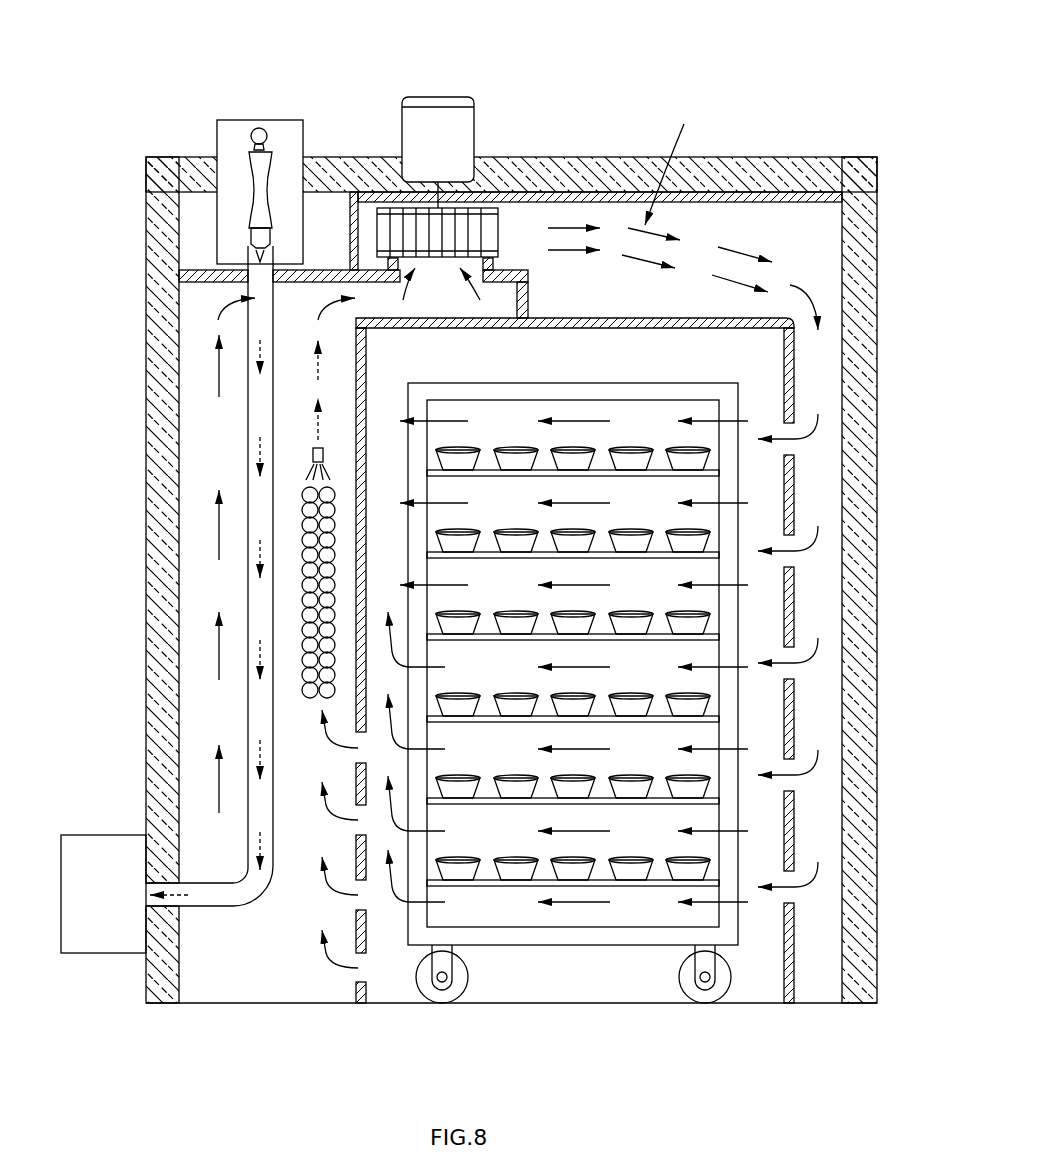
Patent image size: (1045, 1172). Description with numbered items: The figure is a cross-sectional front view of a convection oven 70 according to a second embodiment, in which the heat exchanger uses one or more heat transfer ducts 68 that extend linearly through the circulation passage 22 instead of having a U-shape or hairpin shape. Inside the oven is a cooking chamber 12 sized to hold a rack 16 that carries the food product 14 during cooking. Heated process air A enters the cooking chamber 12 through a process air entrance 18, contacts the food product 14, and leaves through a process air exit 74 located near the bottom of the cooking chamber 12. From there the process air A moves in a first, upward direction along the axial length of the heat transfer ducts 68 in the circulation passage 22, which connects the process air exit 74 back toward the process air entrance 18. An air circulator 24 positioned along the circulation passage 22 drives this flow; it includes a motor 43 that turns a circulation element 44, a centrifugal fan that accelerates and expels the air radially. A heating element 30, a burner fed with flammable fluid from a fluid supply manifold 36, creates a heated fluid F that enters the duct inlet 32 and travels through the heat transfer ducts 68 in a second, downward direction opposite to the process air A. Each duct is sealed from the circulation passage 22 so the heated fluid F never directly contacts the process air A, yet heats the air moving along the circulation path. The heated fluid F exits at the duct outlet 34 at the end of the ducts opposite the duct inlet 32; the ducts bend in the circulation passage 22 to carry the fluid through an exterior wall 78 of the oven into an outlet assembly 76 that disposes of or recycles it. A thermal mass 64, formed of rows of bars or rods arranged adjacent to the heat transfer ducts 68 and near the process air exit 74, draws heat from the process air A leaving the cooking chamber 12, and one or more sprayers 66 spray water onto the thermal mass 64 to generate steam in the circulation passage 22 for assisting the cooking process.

The convection oven 70 is at (778, 72).
The circulation passage 22 is at (775, 218).
The cooking chamber 12 is at (600, 355).
The process air entrance 18 is at (790, 893).
The process air exit 74 is at (355, 978).
The rack 16 is at (505, 945).
The food product 14 is at (628, 868).
The air circulator 24 is at (432, 90).
The motor 43 is at (448, 97).
The circulation element 44 is at (497, 208).
The heating element 30 is at (248, 195).
The fluid supply manifold 36 is at (262, 126).
The duct inlet 32 is at (255, 255).
The duct outlet 34 is at (148, 895).
The outlet assembly 76 is at (110, 835).
The exterior wall 78 is at (155, 1004).
The heat transfer duct 68 is at (248, 430).
The sprayer 66 is at (313, 455).
The thermal mass 64 is at (308, 605).
The heated fluid F is at (255, 330).
The process air A is at (215, 1037).